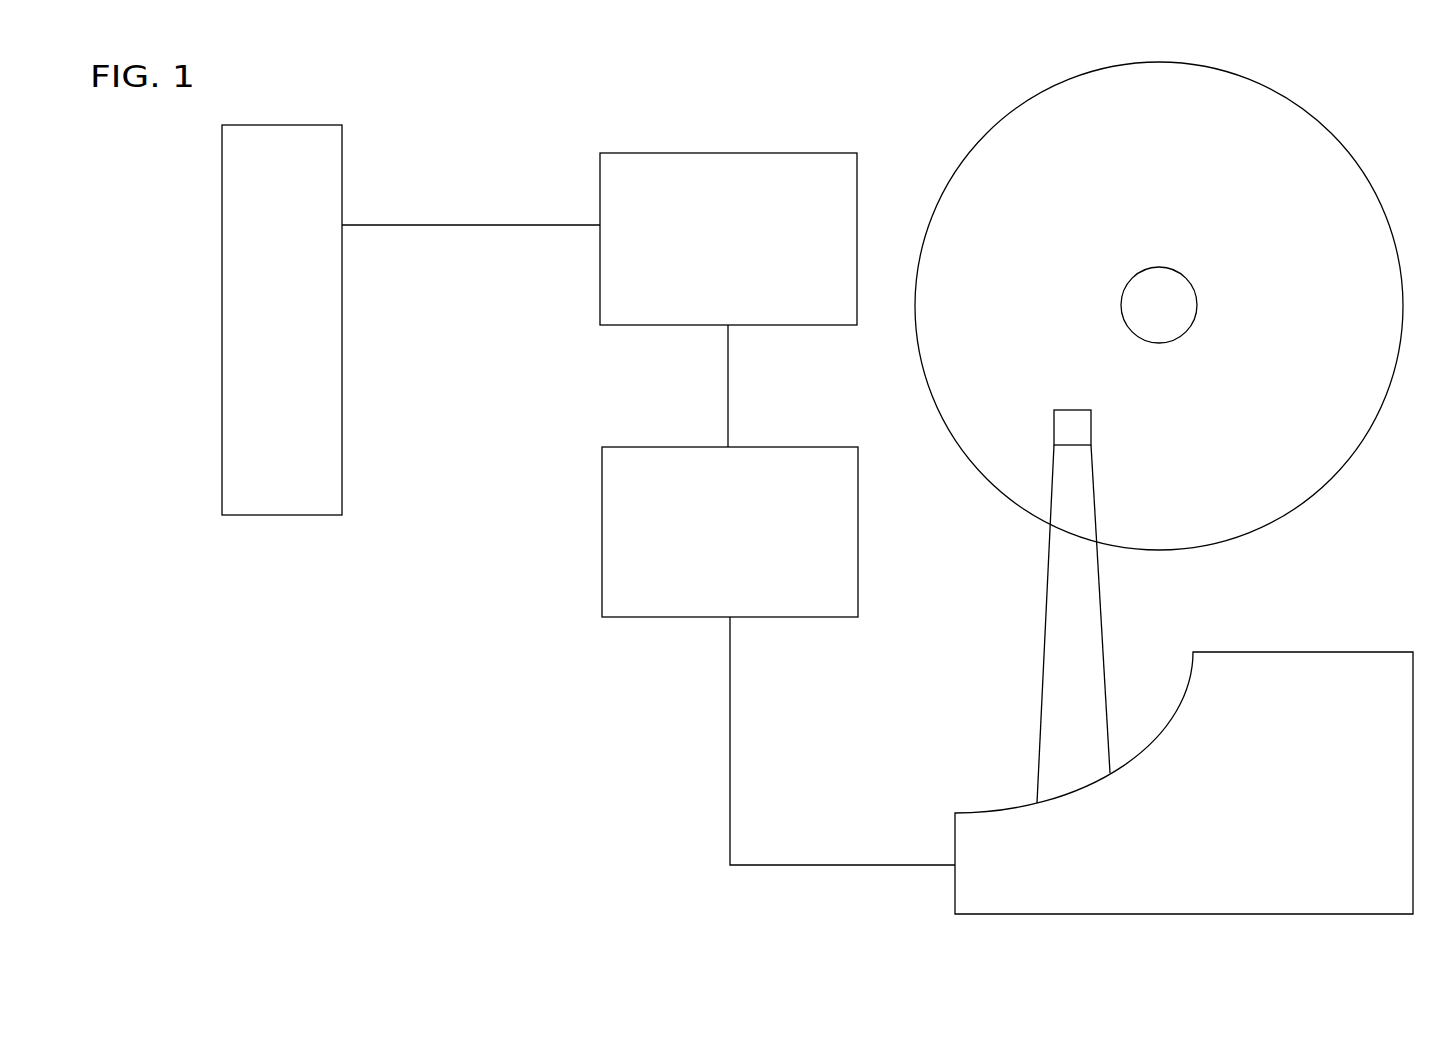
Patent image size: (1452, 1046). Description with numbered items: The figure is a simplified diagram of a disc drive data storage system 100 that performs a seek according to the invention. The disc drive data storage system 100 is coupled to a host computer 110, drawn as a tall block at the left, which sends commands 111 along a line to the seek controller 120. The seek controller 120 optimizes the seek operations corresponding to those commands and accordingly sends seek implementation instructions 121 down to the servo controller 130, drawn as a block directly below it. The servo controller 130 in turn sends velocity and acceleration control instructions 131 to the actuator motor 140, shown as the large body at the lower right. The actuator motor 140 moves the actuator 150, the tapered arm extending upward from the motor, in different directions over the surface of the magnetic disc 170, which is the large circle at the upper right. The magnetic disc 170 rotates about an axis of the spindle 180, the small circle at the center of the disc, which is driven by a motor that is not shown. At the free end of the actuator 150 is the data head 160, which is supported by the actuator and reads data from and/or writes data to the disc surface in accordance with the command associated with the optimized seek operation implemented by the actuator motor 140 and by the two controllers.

The disc drive data storage system 100 is at (462, 719).
The host computer 110 is at (295, 516).
The commands 111 is at (423, 226).
The seek controller 120 is at (700, 152).
The seek implementation instructions 121 is at (728, 360).
The servo controller 130 is at (602, 510).
The velocity and acceleration control instructions 131 is at (730, 713).
The actuator motor 140 is at (955, 898).
The actuator 150 is at (1075, 640).
The data head 160 is at (1062, 421).
The magnetic disc 170 is at (1350, 459).
The spindle 180 is at (1195, 288).